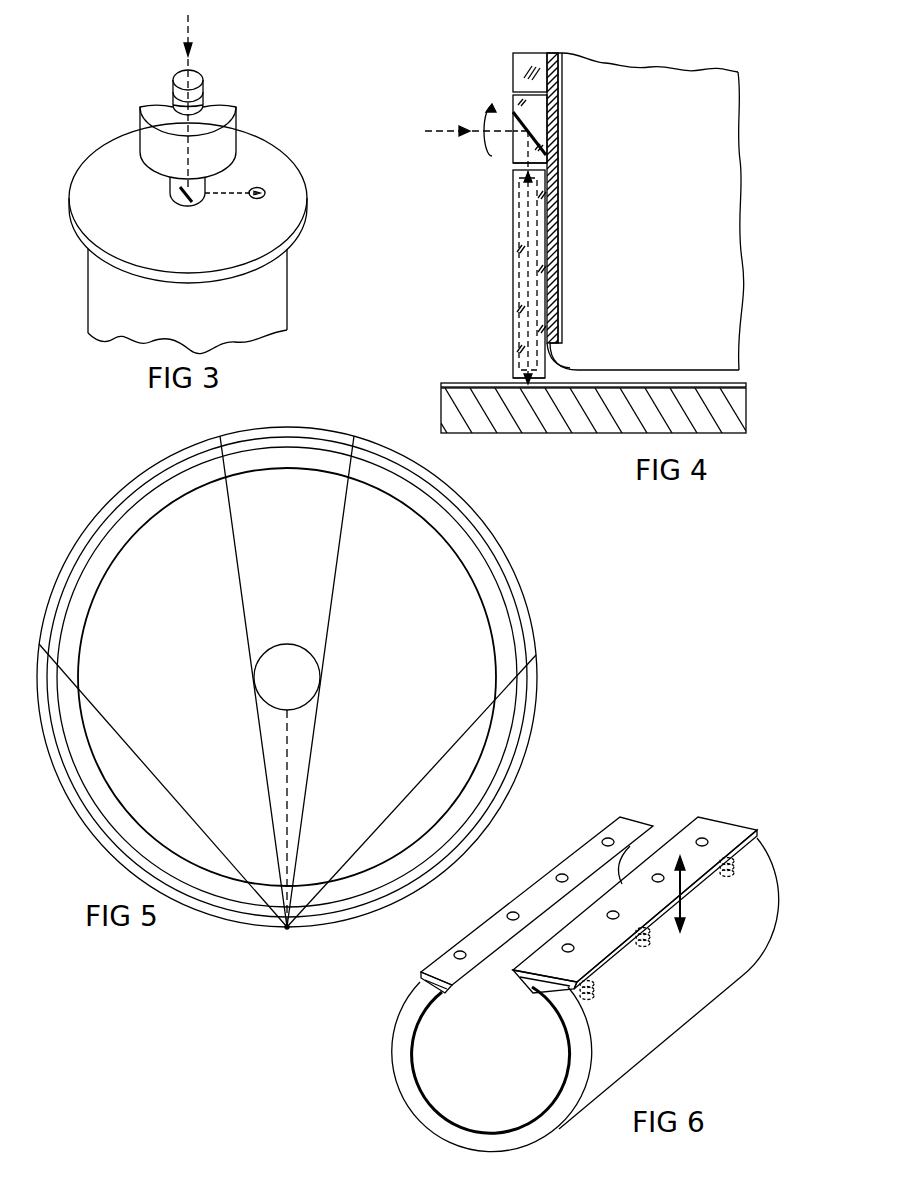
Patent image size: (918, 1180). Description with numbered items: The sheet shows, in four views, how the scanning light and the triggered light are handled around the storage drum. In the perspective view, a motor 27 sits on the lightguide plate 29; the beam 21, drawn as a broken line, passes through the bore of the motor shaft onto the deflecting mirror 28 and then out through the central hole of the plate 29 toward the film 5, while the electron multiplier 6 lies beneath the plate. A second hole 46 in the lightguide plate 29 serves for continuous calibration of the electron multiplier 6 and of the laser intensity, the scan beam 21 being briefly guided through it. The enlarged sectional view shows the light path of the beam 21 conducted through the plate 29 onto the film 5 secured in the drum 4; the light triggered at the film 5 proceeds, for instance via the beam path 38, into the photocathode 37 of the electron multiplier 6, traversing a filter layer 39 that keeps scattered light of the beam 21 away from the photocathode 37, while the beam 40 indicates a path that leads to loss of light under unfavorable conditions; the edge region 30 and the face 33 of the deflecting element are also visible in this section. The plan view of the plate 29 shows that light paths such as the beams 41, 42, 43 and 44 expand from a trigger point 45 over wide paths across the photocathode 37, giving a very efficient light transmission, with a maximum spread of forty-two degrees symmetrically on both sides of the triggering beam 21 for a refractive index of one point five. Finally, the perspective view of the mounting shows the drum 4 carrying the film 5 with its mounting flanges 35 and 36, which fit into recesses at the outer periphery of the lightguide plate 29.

In FIG. 4, the drum 4 is at (460, 405).
In FIG. 6, the drum 4 is at (405, 1022).
In FIG. 4, the film 5 is at (481, 383).
In FIG. 5, the film 5 is at (110, 506).
In FIG. 6, the film 5 is at (425, 1060).
In FIG. 3, the electron multiplier 6 is at (273, 297).
In FIG. 4, the electron multiplier 6 is at (712, 168).
In FIG. 3, the beam 21 is at (188, 33).
In FIG. 4, the beam 21 is at (446, 129).
In FIG. 5, the beam 21 is at (295, 760).
In FIG. 3, the motor 27 is at (220, 97).
In FIG. 3, the deflecting mirror 28 is at (178, 204).
In FIG. 4, the deflecting mirror 28 is at (528, 125).
In FIG. 5, the deflecting mirror 28 is at (304, 645).
In FIG. 3, the lightguide plate 29 is at (265, 152).
In FIG. 4, the lightguide plate 29 is at (545, 372).
In FIG. 5, the lightguide plate 29 is at (197, 475).
In FIG. 4, the rounded edge of multiplier housing 30 is at (553, 352).
In FIG. 4, the reflecting surface 33 is at (541, 152).
In FIG. 6, the mounting flange 35 is at (440, 963).
In FIG. 6, the mounting flange 36 is at (597, 940).
In FIG. 4, the photocathode 37 is at (557, 244).
In FIG. 5, the photocathode 37 is at (141, 506).
In FIG. 4, the beam path 38 is at (535, 224).
In FIG. 4, the filter layer 39 is at (549, 266).
In FIG. 4, the beam 40 is at (513, 193).
In FIG. 5, the beam 41 is at (110, 714).
In FIG. 5, the beam 42 is at (232, 562).
In FIG. 5, the beam 43 is at (341, 564).
In FIG. 5, the beam 44 is at (469, 719).
In FIG. 5, the trigger point 45 is at (280, 932).
In FIG. 3, the second hole 46 is at (262, 189).